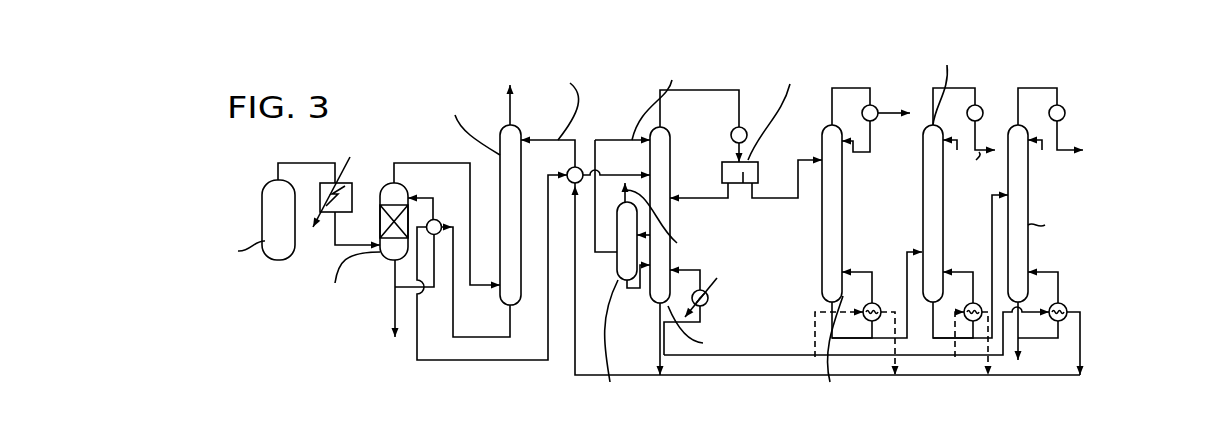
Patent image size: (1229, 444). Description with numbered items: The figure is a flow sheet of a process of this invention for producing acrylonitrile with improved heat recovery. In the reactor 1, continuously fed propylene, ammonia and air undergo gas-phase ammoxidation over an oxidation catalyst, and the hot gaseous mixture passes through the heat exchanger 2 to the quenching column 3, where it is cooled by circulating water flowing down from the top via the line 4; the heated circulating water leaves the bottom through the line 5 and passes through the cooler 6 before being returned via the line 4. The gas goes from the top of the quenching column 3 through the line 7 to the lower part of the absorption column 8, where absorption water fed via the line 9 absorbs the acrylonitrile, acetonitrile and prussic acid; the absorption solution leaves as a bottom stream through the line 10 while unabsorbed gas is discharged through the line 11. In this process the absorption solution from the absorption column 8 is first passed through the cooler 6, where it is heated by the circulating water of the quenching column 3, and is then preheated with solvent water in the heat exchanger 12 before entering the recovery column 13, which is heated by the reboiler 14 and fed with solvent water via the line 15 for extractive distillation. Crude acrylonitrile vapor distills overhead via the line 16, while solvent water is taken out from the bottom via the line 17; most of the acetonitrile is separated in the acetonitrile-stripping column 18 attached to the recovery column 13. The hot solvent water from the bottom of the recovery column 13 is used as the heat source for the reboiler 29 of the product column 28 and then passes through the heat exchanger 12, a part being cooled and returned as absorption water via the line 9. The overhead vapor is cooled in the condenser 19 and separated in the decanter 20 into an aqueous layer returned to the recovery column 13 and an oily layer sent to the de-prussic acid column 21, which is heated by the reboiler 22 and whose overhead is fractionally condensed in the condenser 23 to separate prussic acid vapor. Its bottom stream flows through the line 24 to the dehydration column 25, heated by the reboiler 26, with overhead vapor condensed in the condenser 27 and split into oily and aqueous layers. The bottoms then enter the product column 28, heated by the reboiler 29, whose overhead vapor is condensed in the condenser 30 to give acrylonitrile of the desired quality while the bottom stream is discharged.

The reactor 1 is at (265, 206).
The heat exchanger 2 is at (351, 184).
The quenching column 3 is at (380, 231).
The line 4 is at (426, 198).
The line 5 is at (395, 272).
The cooler 6 is at (439, 220).
The line 7 is at (451, 163).
The absorption column 8 is at (501, 198).
The line 9 is at (554, 100).
The line 10 is at (510, 322).
The line 11 is at (508, 113).
The heat exchanger 12 is at (569, 168).
The recovery column 13 is at (670, 222).
The reboiler 14 is at (708, 298).
The line 15 is at (612, 140).
The line 16 is at (693, 93).
The line 17 is at (659, 338).
The acetonitrile-stripping column 18 is at (617, 274).
The condenser 19 is at (745, 131).
The decanter 20 is at (757, 168).
The de-prussic acid column 21 is at (822, 218).
The reboiler 22 is at (875, 302).
The condenser 23 is at (873, 104).
The line 24 is at (906, 265).
The dehydration column 25 is at (923, 185).
The reboiler 26 is at (975, 302).
The condenser 27 is at (995, 93).
The product column 28 is at (1030, 184).
The reboiler 29 is at (1063, 303).
The condenser 30 is at (1082, 93).